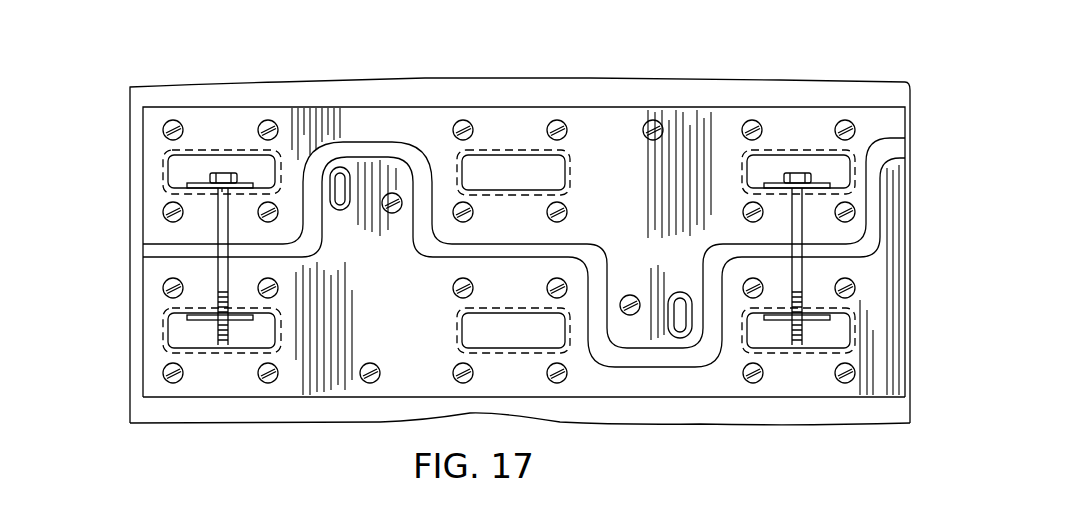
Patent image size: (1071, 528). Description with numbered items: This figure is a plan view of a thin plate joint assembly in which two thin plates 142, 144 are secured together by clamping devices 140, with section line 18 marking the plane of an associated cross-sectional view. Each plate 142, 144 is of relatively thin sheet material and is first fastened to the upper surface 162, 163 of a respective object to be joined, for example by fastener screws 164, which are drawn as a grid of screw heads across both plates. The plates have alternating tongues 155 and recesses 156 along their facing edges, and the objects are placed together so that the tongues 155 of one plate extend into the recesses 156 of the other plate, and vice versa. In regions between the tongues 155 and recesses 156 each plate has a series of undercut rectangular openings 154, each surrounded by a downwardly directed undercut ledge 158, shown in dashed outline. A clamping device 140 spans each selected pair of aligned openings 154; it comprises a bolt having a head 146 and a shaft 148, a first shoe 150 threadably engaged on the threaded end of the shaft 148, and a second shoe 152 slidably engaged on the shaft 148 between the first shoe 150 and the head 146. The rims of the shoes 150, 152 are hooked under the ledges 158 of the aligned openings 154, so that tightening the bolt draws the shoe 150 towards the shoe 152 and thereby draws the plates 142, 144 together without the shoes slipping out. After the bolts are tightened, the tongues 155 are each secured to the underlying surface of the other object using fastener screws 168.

The section line 18- 18 is at (232, 62).
The clamping device 140 is at (232, 268).
The plate 142 is at (592, 118).
The plate 144 is at (655, 386).
The head 146 is at (226, 175).
The shaft 148 is at (223, 231).
The first shoe 150 is at (215, 316).
The second shoe 152 is at (192, 190).
The undercut rectangular opening 154 is at (243, 162).
The tongue 155 is at (368, 170).
The recess 156 is at (405, 228).
The undercut ledge 158 is at (568, 172).
The upper surface 162 is at (425, 86).
The upper surface 163 is at (335, 412).
The fastener screw 164 is at (653, 122).
The fastener screw 168 is at (626, 312).